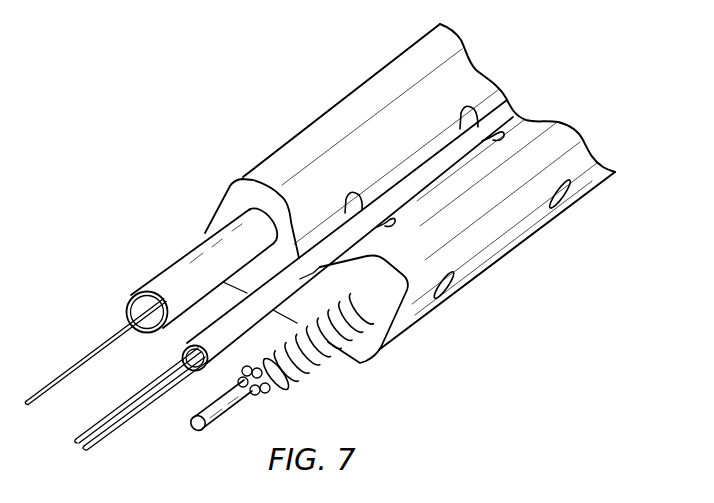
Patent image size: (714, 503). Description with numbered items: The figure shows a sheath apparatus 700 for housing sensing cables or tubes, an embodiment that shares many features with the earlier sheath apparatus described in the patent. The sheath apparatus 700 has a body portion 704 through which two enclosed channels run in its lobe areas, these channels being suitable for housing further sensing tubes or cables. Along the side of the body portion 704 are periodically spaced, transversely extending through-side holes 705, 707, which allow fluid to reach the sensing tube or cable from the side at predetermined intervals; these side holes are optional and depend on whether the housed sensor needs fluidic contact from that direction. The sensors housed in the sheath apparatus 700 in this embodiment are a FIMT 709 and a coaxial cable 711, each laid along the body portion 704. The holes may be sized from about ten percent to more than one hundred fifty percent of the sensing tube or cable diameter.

The sheath apparatus 700 is at (232, 152).
The body portion 704 is at (504, 247).
The transversely extending through-side hole 705 is at (450, 298).
The transversely extending through-side hole 707 is at (565, 210).
The FIMT 709 is at (127, 303).
The coaxial cable 711 is at (289, 370).